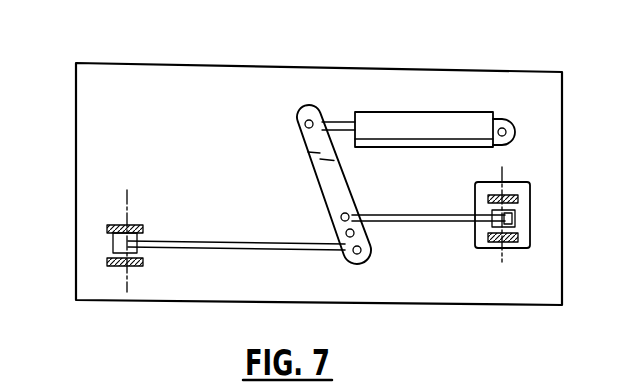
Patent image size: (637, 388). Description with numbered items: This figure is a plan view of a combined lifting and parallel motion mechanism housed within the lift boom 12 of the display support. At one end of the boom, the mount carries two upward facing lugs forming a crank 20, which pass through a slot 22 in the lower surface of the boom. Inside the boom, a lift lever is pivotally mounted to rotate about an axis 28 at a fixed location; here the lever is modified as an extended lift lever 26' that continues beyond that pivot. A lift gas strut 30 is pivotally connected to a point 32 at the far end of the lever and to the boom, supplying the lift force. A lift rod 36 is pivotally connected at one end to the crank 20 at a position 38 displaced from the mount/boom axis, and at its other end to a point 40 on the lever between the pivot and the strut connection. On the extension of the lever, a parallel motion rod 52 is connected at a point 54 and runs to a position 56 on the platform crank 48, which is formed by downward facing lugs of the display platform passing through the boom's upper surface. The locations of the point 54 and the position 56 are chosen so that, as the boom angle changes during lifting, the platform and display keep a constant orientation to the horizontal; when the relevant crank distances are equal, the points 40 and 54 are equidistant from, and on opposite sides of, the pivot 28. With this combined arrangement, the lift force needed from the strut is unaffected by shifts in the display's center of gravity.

The lift boom 12 is at (516, 62).
The crank 20 is at (518, 248).
The slot 22 is at (530, 222).
The extended lift lever 26' is at (296, 144).
The axis 28 is at (345, 233).
The lift gas strut 30 is at (423, 112).
The point 32 is at (310, 120).
The lift rod 36 is at (450, 223).
The position 38 is at (517, 195).
The point 40 is at (340, 216).
The platform crank 48 is at (107, 263).
The parallel motion rod 52 is at (258, 252).
The point 54 is at (361, 252).
The position 56 is at (128, 203).